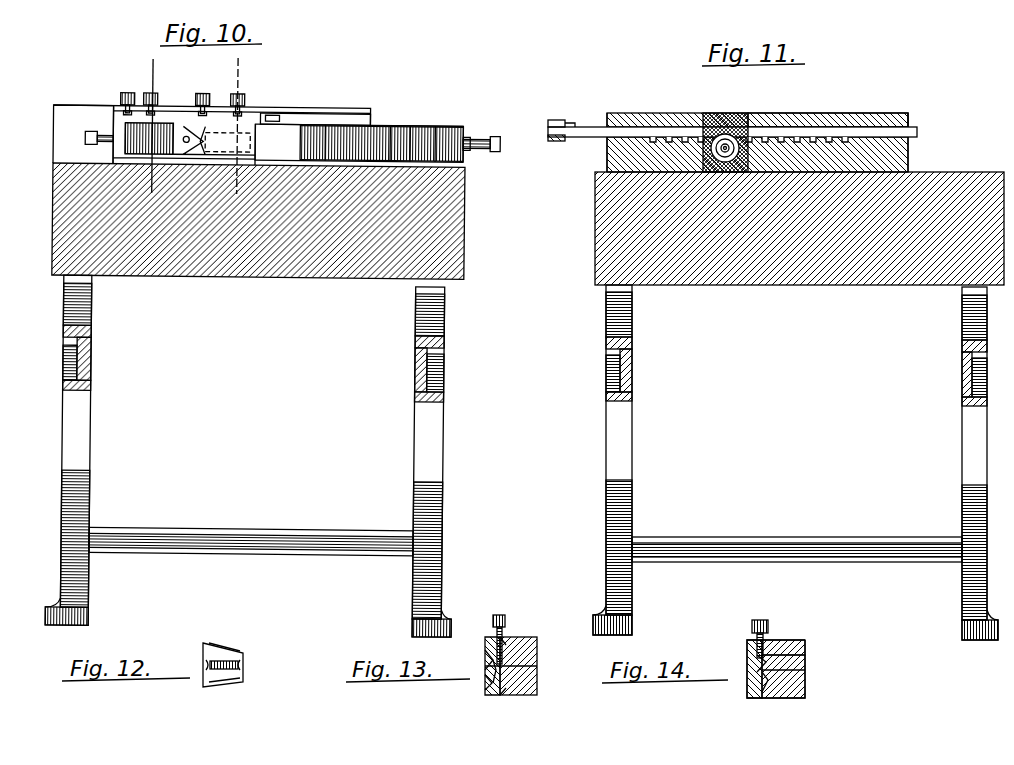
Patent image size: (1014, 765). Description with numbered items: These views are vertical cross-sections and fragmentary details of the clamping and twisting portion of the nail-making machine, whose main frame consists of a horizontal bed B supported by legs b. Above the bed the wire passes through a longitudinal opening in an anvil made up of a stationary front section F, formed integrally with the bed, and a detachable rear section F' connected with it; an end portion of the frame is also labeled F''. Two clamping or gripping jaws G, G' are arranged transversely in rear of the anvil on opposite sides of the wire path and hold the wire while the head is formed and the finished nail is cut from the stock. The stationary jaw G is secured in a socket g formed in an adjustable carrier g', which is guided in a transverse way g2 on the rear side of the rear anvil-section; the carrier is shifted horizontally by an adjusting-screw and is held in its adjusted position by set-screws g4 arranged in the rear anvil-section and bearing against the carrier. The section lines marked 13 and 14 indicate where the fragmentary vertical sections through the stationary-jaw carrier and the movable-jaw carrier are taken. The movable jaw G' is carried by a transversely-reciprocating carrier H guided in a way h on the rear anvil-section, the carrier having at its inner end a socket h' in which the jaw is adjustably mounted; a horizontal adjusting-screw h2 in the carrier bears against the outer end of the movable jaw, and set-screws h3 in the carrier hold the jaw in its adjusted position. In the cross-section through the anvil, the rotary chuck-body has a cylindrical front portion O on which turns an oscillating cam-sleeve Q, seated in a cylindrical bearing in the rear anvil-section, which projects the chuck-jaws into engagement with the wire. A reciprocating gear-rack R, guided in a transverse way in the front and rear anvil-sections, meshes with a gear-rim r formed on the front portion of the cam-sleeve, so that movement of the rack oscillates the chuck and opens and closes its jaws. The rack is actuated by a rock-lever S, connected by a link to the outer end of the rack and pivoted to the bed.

In FIG. 10, the horizontal bed B is at (338, 301).
In FIG. 11, the horizontal bed B is at (808, 304).
In FIG. 10, the legs b is at (243, 456).
In FIG. 11, the legs b is at (791, 462).
In FIG. 10, the stationary front anvil-section F is at (246, 129).
In FIG. 11, the stationary front anvil-section F is at (757, 130).
In FIG. 11, the detachable rear anvil-section F' is at (828, 107).
In FIG. 13, the detachable rear anvil-section F' is at (523, 654).
In FIG. 14, the detachable rear anvil-section F' is at (790, 682).
In FIG. 10, the frame end section F'' is at (83, 134).
In FIG. 10, the stationary clamping-jaw G is at (157, 106).
In FIG. 12, the stationary clamping-jaw G is at (223, 656).
In FIG. 13, the stationary clamping-jaw G is at (523, 666).
In FIG. 10, the movable clamping-jaw G' is at (214, 109).
In FIG. 14, the movable clamping-jaw G' is at (809, 676).
In FIG. 13, the socket g is at (504, 692).
In FIG. 10, the adjustable carrier g' is at (103, 147).
In FIG. 13, the adjustable carrier g' is at (471, 685).
In FIG. 10, the transverse way g2 is at (133, 122).
In FIG. 13, the transverse way g2 is at (490, 692).
In FIG. 10, the set-screws g4 is at (150, 90).
In FIG. 13, the set-screws g4 is at (499, 615).
In FIG. 10, the reciprocating carrier H is at (278, 142).
In FIG. 14, the reciprocating carrier H is at (747, 686).
In FIG. 14, the way h is at (755, 676).
In FIG. 14, the socket h' is at (776, 702).
In FIG. 10, the horizontal adjusting-screw h2 is at (480, 136).
In FIG. 14, the set-screws h3 is at (805, 655).
In FIG. 10, the section line 13 13 is at (162, 55).
In FIG. 10, the section line 14 14 is at (250, 54).
In FIG. 11, the rock-lever S is at (554, 142).
In FIG. 11, the cylindrical front portion of chuck-body O is at (717, 138).
In FIG. 11, the oscillating cam-sleeve Q is at (727, 138).
In FIG. 11, the reciprocating gear-rack R is at (810, 127).
In FIG. 11, the gear-rim r is at (772, 137).